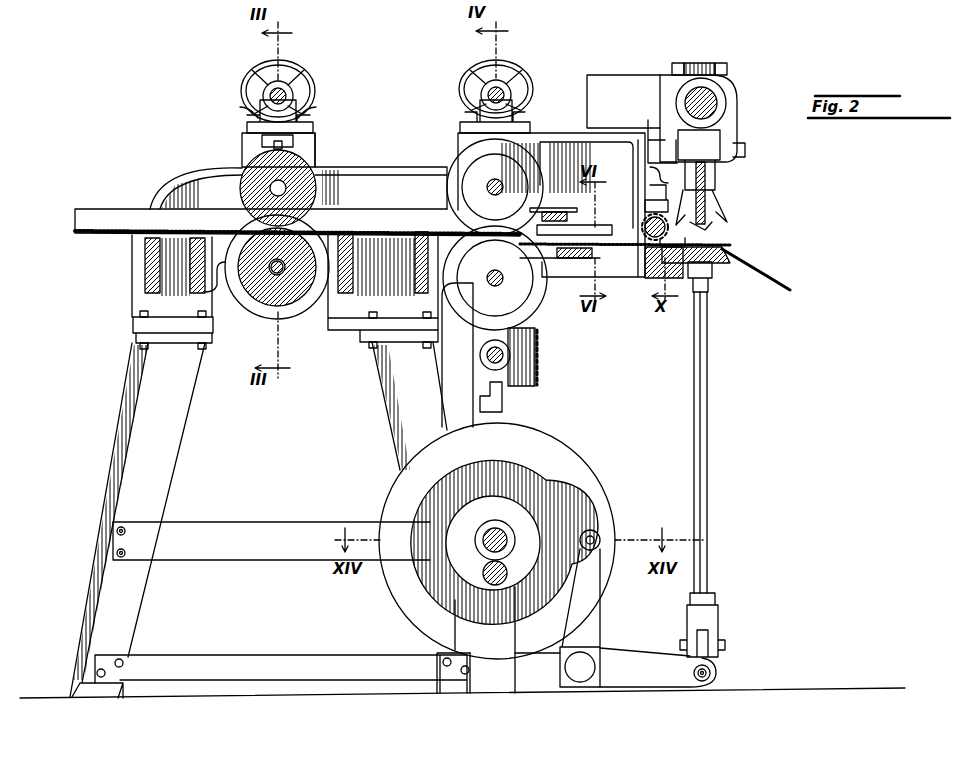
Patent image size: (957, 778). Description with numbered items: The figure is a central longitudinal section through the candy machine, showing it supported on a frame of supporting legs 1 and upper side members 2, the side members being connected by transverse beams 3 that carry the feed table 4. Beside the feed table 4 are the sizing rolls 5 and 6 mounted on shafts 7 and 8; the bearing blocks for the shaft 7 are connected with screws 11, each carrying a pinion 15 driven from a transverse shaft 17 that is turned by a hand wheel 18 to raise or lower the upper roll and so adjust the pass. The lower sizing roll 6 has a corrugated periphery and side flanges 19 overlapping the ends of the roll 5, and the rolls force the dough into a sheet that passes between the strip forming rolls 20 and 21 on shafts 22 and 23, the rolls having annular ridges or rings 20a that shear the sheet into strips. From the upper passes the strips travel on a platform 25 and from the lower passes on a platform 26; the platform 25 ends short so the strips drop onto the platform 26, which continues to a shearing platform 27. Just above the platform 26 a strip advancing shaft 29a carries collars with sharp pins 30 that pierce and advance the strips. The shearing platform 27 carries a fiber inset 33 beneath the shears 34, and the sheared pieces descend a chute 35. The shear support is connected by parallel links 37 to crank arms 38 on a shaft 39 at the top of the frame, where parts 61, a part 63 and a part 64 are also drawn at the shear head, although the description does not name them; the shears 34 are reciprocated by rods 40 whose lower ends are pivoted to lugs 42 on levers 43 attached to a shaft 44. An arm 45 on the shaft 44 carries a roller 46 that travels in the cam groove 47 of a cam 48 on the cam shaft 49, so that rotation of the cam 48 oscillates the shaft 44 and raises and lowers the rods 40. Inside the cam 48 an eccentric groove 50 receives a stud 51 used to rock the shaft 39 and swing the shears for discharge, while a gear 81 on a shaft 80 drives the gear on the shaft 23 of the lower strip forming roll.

The supporting legs 1 is at (172, 455).
The upper side members 2 is at (340, 180).
The transverse beams 3 is at (152, 265).
The feed table 4 is at (108, 230).
The upper sizing roll 5 is at (290, 172).
The lower sizing roll 6 is at (265, 288).
The shaft of upper sizing roll 7 is at (240, 172).
The shaft of lower sizing roll 8 is at (283, 262).
The screw 11 is at (260, 145).
The pinion 15 is at (300, 108).
The transverse shaft 17 is at (270, 90).
The hand wheel 18 is at (300, 70).
The side flanges 19 is at (300, 305).
The upper strip forming roll 20 is at (502, 170).
The annular ridges or rings 20a is at (576, 330).
The lower strip forming roll 21 is at (470, 300).
The shaft of upper strip forming roll 22 is at (500, 185).
The shaft of lower strip forming roll 23 is at (485, 272).
The upper platform 25 is at (575, 233).
The lower platform 26 is at (625, 262).
The shearing platform 27 is at (730, 252).
The strip advancing shaft 29a is at (665, 280).
The sharp pins 30 is at (646, 222).
The fiber inset 33 is at (700, 247).
The shears 34 is at (718, 222).
The chute 35 is at (778, 282).
The parallel links 37 is at (675, 150).
The crank arms 38 is at (718, 122).
The shaft 39 is at (710, 100).
The rods 40 is at (708, 405).
The lugs 42 is at (712, 662).
The levers 43 is at (625, 655).
The shaft 44 is at (580, 668).
The arm 45 is at (598, 612).
The roller 46 is at (596, 530).
The cam groove 47 is at (560, 472).
The cam 48 is at (545, 445).
The cam shaft 49 is at (490, 540).
The eccentric groove 50 is at (515, 673).
The stud 51 is at (495, 575).
The cap screws 61 is at (675, 66).
The spring 63 is at (692, 63).
The pin 64 is at (677, 241).
The shaft 80 is at (500, 388).
The gear 81 is at (538, 357).